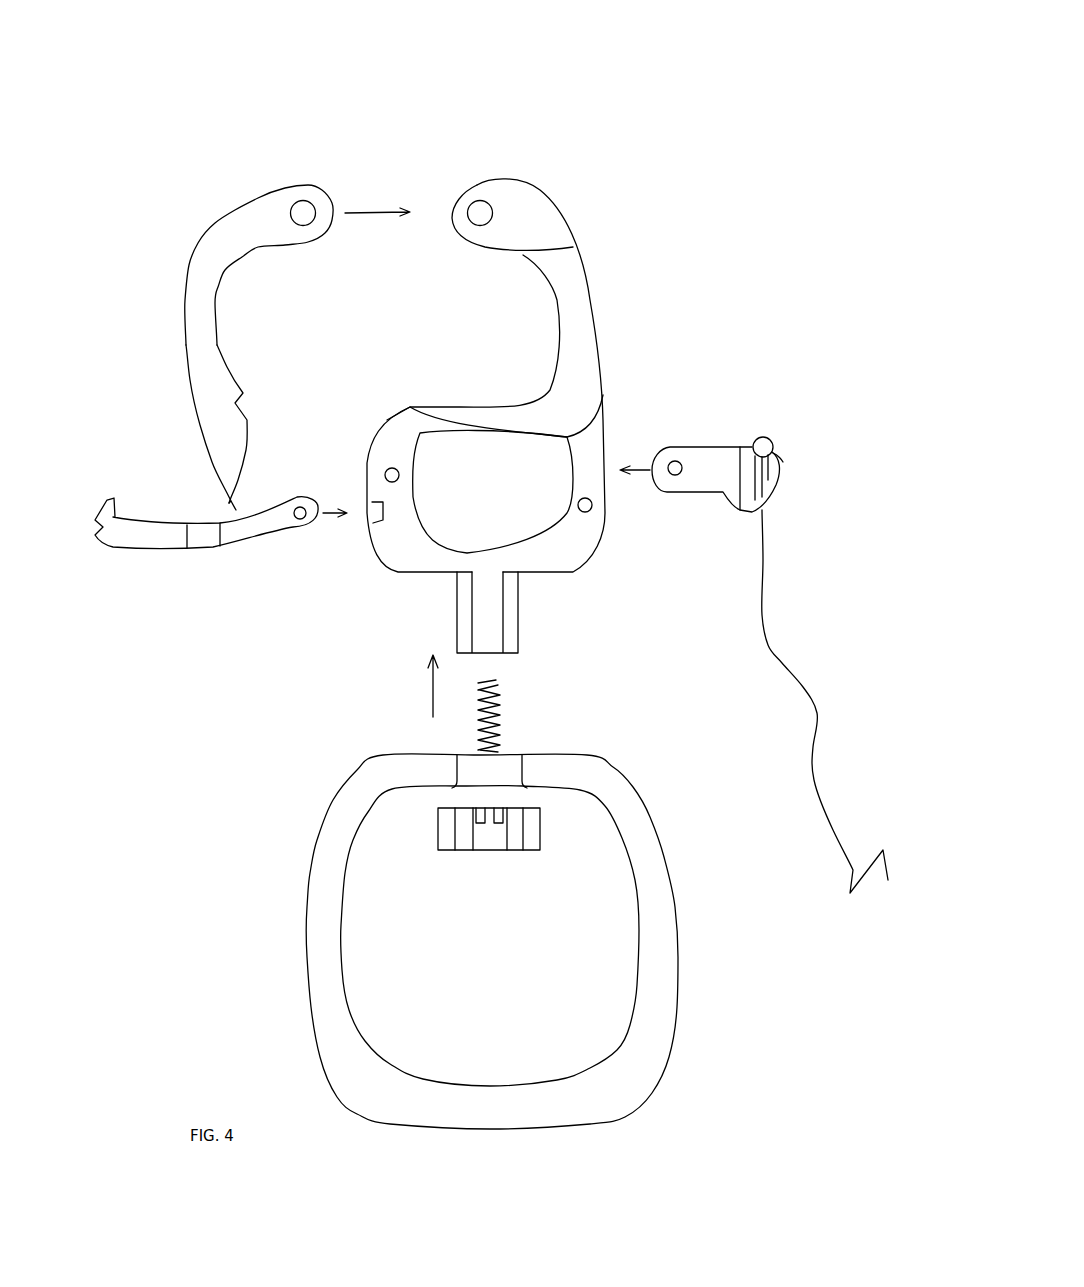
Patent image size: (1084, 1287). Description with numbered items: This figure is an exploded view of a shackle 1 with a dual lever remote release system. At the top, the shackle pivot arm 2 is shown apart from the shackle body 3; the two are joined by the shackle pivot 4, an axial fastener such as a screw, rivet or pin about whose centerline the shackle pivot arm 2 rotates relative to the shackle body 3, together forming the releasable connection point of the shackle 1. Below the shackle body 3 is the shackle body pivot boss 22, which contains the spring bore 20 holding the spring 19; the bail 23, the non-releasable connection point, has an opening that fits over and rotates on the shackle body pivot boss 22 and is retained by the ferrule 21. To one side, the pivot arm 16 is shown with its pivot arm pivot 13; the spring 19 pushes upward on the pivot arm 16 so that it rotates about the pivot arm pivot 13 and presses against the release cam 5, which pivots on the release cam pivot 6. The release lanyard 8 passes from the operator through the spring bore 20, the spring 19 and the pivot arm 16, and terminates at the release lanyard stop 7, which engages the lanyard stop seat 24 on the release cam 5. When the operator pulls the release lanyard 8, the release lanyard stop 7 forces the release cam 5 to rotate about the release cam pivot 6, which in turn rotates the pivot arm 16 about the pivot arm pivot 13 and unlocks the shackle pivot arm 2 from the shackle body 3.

The shackle 1 is at (301, 86).
The shackle pivot arm 2 is at (233, 230).
The shackle body 3 is at (528, 222).
The shackle pivot 4 is at (305, 200).
The release cam 5 is at (705, 455).
The release cam pivot 6 is at (384, 468).
The release lanyard stop 7 is at (762, 443).
The release lanyard 8 is at (773, 643).
The pivot arm pivot 13 is at (298, 507).
The pivot arm 16 is at (170, 540).
The spring 19 is at (500, 737).
The spring bore 20 is at (483, 640).
The ferrule 21 is at (541, 842).
The shackle body pivot boss 22 is at (512, 608).
The bail 23 is at (630, 823).
The lanyard stop seat 24 is at (777, 453).